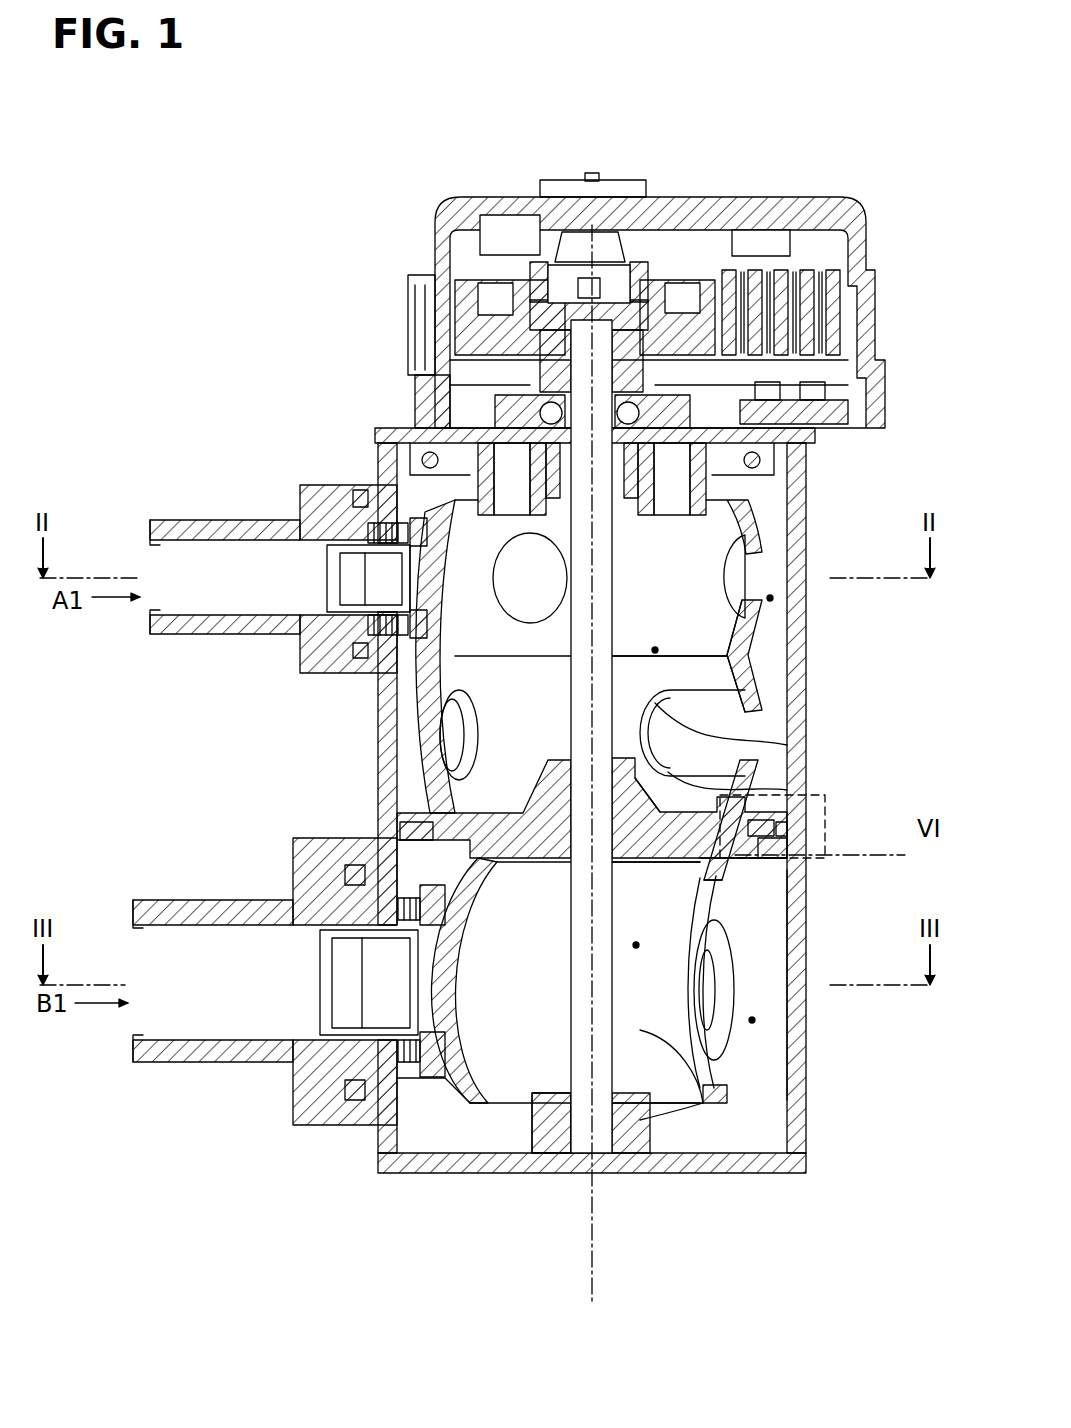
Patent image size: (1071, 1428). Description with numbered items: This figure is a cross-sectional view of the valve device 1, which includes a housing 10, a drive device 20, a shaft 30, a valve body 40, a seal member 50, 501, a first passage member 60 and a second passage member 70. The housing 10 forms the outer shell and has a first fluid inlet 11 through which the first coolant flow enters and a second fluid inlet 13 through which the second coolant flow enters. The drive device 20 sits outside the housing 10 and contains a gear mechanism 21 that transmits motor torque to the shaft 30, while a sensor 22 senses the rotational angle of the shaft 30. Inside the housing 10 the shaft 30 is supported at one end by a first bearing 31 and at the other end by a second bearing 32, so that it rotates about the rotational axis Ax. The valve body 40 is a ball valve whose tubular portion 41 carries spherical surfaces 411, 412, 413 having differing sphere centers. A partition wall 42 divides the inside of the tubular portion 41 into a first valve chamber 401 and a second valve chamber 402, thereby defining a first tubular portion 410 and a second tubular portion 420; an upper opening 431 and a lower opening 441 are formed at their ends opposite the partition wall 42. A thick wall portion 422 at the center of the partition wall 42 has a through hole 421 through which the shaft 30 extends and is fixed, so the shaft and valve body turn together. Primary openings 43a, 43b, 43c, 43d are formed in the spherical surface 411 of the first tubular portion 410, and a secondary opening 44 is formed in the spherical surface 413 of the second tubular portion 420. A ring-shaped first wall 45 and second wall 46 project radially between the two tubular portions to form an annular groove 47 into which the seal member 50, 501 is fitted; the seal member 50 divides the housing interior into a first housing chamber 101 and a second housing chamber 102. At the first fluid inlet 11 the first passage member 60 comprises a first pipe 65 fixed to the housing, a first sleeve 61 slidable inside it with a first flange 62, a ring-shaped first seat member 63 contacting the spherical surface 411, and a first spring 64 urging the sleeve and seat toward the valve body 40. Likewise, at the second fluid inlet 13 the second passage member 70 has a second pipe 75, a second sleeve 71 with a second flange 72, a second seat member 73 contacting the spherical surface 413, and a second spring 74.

The valve device 1 is at (332, 145).
The housing 10 is at (782, 1172).
The first fluid inlet 11 is at (397, 560).
The second fluid inlet 13 is at (345, 885).
The drive device 20 is at (803, 193).
The gear mechanism 21 is at (662, 275).
The sensor 22 is at (548, 283).
The shaft 30 is at (612, 1030).
The first bearing 31 is at (545, 395).
The second bearing 32 is at (560, 1130).
The valve body 40 is at (760, 683).
The tubular portion 41 is at (695, 800).
The first tubular portion 410 is at (790, 470).
The spherical surface 411 is at (487, 470).
The spherical surface 412 is at (412, 740).
The spherical surface 413 is at (472, 1103).
The second tubular portion 420 is at (720, 1095).
The through hole 421 is at (700, 872).
The thick wall portion 422 is at (660, 790).
The partition wall 42 is at (620, 803).
The primary opening 43a is at (512, 572).
The primary opening 43b is at (742, 578).
The primary opening 43c is at (445, 730).
The primary opening 43d is at (662, 742).
The upper opening 431 is at (810, 436).
The secondary opening 44 is at (705, 1055).
The lower opening 441 is at (530, 1150).
The first wall 45 is at (765, 800).
The second wall 46 is at (750, 862).
The groove 47 is at (785, 830).
The seal member 50 is at (854, 855).
The seal ring 501 is at (780, 838).
The first passage member 60 is at (273, 573).
The first sleeve 61 is at (352, 560).
The first flange 62 is at (372, 530).
The first seat member 63 is at (402, 690).
The first spring 64 is at (362, 660).
The first pipe 65 is at (215, 637).
The second passage member 70 is at (213, 977).
The second sleeve 71 is at (360, 940).
The second flange 72 is at (378, 880).
The second seat member 73 is at (445, 1110).
The second spring 74 is at (372, 1100).
The second pipe 75 is at (212, 1050).
The first housing chamber 101 is at (772, 598).
The second housing chamber 102 is at (754, 1020).
The first valve chamber 401 is at (657, 650).
The second valve chamber 402 is at (638, 945).
The rotational axis Ax is at (594, 1278).